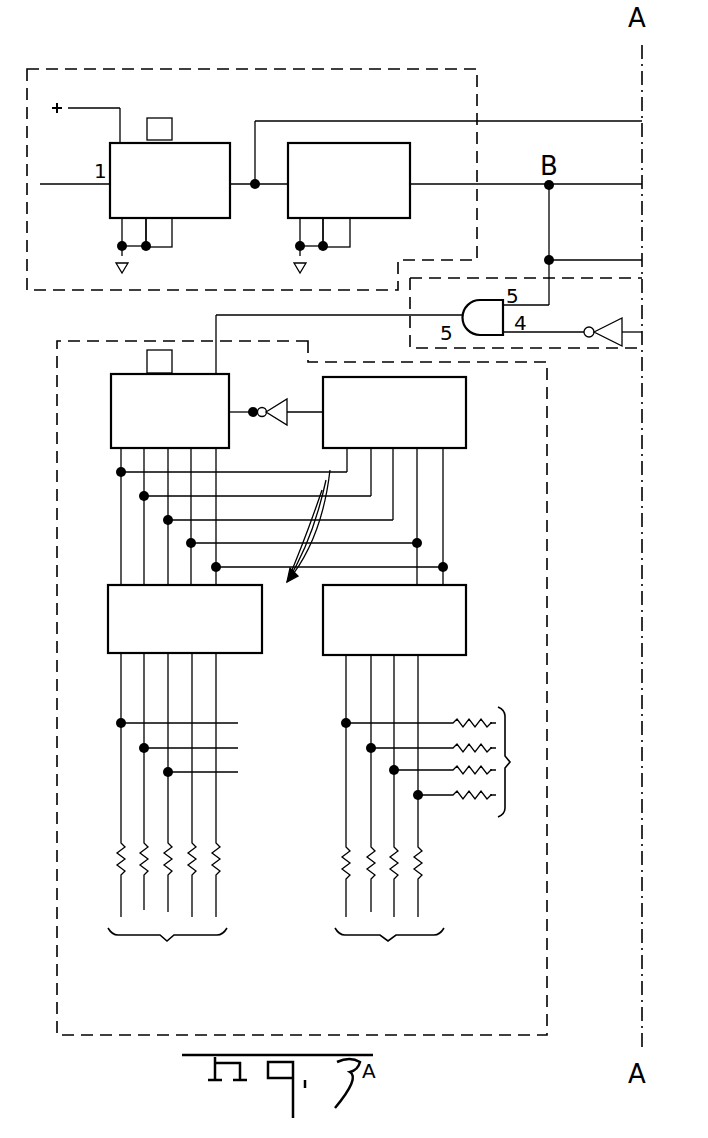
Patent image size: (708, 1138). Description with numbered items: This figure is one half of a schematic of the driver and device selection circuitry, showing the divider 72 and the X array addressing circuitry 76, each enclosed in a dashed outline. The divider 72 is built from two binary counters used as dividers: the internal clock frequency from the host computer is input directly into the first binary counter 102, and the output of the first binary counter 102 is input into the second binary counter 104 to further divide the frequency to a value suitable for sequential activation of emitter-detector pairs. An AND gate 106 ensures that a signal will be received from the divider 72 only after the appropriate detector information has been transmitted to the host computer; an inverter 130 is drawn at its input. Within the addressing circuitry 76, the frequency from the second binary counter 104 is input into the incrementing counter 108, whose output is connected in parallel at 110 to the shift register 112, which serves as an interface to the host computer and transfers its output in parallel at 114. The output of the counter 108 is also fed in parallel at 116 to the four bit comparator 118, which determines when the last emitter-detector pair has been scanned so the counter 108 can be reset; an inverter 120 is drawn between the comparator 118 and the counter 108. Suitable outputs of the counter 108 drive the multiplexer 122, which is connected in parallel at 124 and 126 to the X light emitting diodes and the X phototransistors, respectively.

The divider 72 is at (255, 69).
The addressing circuitry 76 is at (57, 735).
The first binary counter 102 is at (214, 210).
The second binary counter 104 is at (402, 214).
The AND gate 106 is at (470, 310).
The incrementing counter 108 is at (111, 423).
The parallel connection 110 is at (192, 556).
The shift register 112 is at (118, 603).
The parallel output 114 is at (173, 817).
The parallel connection 116 is at (300, 543).
The 4 bit comparator 118 is at (325, 388).
The inverter 120 is at (275, 425).
The multiplexer 122 is at (455, 603).
The parallel connection 124 is at (437, 677).
The parallel connection 126 is at (454, 762).
The inverter 130 is at (600, 326).